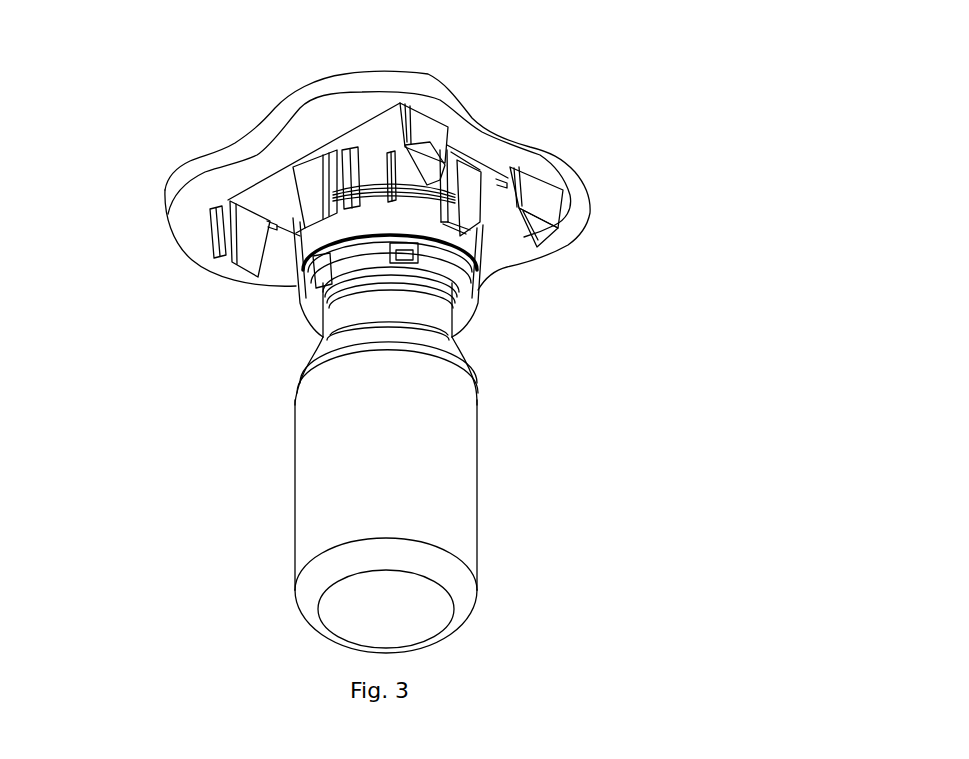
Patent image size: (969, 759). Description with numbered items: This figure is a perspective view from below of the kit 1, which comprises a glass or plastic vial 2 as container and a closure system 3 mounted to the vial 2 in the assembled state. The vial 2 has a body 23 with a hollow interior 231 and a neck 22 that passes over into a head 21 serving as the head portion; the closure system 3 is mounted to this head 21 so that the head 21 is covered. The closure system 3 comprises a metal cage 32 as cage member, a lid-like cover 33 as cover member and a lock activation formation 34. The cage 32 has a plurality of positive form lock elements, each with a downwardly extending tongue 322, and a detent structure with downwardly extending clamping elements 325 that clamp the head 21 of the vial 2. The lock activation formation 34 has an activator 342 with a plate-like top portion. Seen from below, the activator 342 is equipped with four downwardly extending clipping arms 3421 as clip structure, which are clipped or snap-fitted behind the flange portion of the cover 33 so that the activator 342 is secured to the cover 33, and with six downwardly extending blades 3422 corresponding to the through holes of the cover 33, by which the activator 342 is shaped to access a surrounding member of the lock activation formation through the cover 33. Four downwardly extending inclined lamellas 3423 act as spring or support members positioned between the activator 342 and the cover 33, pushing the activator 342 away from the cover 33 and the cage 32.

The kit 1 is at (208, 472).
The vial 2 is at (258, 417).
The head 21 is at (445, 305).
The neck 22 is at (423, 320).
The body 23 is at (443, 522).
The hollow interior 231 is at (406, 506).
The closure system 3 is at (631, 218).
The cage 32 is at (283, 299).
The tongue 322 is at (447, 263).
The clamping element 325 is at (318, 295).
The cover 33 is at (501, 259).
The lock activation formation 34 is at (613, 169).
The activator 342 is at (310, 130).
The clipping arm 3421 is at (310, 207).
The blade 3422 is at (394, 157).
The lamella 3423 is at (355, 163).